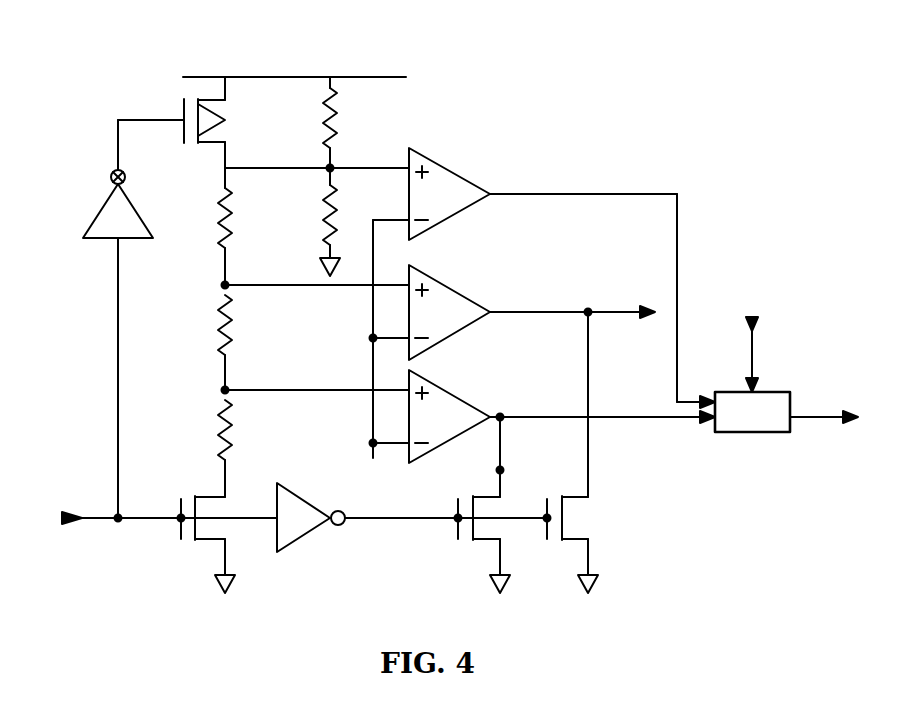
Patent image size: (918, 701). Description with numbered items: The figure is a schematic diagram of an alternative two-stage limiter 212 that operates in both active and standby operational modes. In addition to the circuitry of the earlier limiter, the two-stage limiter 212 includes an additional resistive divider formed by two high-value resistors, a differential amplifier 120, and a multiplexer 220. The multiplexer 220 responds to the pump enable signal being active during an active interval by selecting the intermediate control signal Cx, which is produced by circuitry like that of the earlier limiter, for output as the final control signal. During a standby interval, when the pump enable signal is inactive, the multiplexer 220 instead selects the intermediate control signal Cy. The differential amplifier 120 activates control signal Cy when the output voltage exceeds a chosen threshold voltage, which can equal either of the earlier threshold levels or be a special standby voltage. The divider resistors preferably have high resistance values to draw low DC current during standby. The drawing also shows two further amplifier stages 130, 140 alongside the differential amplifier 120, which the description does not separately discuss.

The two-stage limiter 212 is at (443, 311).
The differential amplifier 120 is at (442, 163).
The comparator 130 is at (442, 281).
The comparator 140 is at (442, 385).
The multiplexer 220 is at (765, 392).